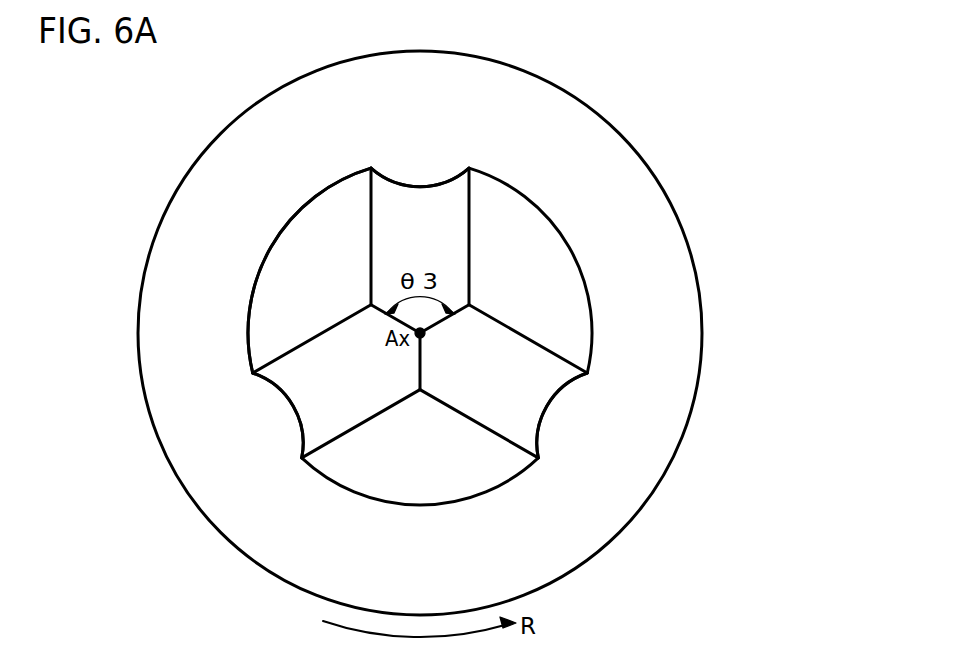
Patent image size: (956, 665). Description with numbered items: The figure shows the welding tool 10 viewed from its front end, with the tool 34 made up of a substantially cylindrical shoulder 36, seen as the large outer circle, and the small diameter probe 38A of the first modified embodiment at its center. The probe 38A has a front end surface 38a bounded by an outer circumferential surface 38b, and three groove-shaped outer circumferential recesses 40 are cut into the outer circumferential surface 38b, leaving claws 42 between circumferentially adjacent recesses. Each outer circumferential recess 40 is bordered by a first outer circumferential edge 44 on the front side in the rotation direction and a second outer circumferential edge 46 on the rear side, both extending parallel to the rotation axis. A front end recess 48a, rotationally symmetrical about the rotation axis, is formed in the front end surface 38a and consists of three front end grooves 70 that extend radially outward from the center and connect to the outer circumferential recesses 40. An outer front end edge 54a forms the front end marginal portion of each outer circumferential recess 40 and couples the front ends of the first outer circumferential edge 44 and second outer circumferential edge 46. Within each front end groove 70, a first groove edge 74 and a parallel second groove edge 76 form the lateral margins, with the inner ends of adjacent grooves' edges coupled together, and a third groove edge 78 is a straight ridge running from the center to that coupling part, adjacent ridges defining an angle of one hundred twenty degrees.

The welding tool 10 is at (87, 96).
The tool 34 is at (124, 96).
The shoulder 36 is at (613, 128).
The probe 38A is at (595, 266).
The front end surface 38a is at (306, 231).
The outer circumferential surface 38b is at (363, 499).
The outer circumferential recess 40 is at (416, 166).
The claw 42 is at (253, 273).
The first outer circumferential edge 44 is at (371, 166).
The second outer circumferential edge 46 is at (469, 166).
The front end recess 48a is at (451, 212).
The outer front end edge 54a is at (561, 394).
The front end groove 70 is at (507, 420).
The first groove edge 74 is at (523, 333).
The second groove edge 76 is at (483, 426).
The third groove edge 78 is at (424, 365).